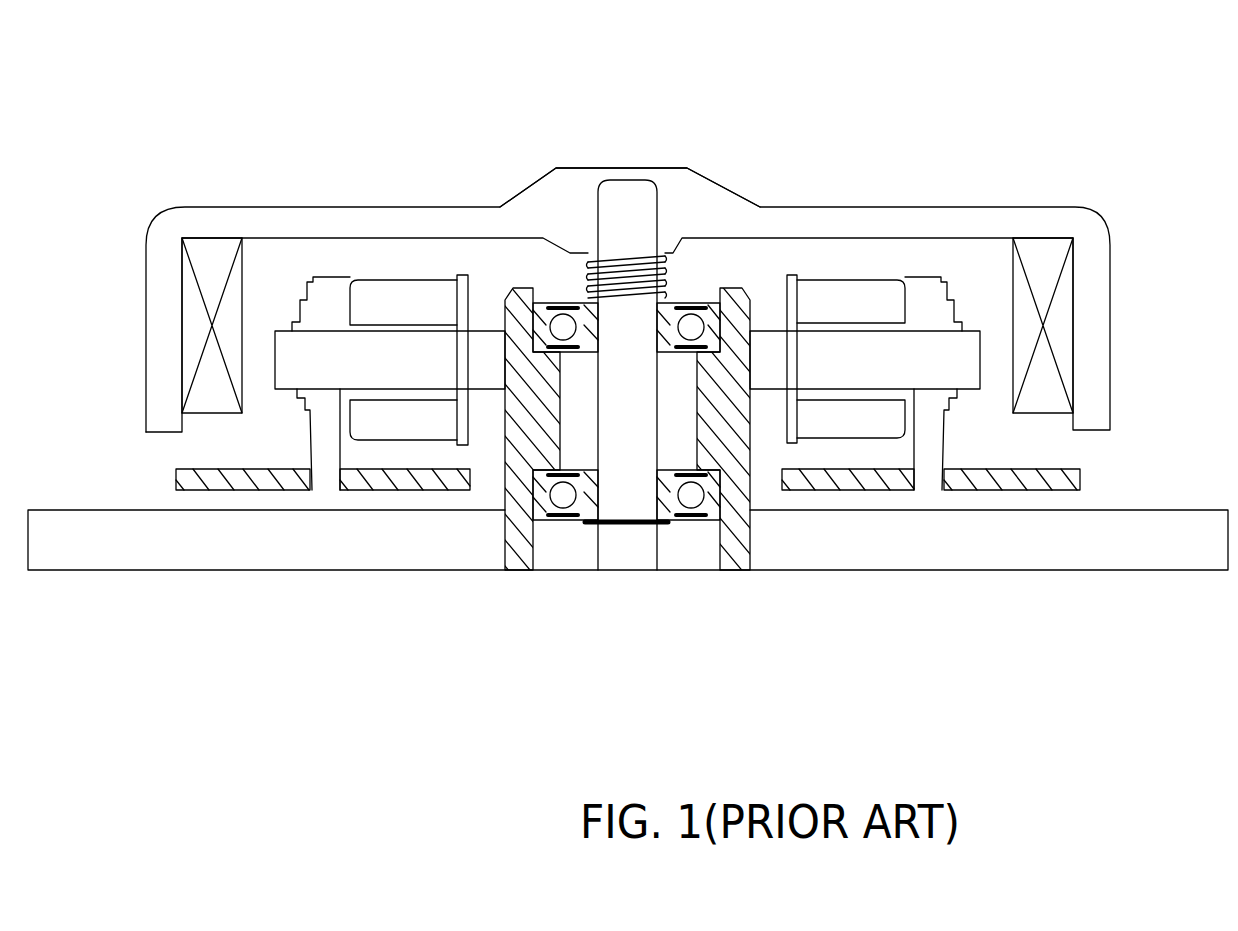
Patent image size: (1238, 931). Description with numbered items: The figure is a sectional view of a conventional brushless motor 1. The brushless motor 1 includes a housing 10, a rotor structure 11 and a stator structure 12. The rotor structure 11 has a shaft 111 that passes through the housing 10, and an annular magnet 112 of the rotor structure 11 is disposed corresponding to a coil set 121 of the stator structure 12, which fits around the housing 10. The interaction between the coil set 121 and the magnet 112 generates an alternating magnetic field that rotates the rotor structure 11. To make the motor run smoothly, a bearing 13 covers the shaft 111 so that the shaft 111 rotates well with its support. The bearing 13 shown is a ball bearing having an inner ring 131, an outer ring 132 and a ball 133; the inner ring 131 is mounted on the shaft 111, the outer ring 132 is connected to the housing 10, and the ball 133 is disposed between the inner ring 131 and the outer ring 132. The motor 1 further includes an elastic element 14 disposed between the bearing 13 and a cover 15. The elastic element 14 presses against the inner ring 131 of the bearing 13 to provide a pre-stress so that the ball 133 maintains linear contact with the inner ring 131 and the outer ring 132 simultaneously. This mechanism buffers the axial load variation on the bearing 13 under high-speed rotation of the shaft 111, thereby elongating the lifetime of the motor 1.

The brushless motor 1 is at (188, 75).
The housing 10 is at (515, 557).
The rotor structure 11 is at (455, 79).
The shaft 111 is at (612, 194).
The annular magnet 112 is at (228, 247).
The stator structure 12 is at (628, 283).
The coil set 121 is at (850, 280).
The bearing 13 is at (852, 79).
The inner ring 131 is at (670, 297).
The outer ring 132 is at (718, 292).
The ball 133 is at (690, 323).
The elastic element 14 is at (647, 255).
The cover 15 is at (573, 180).